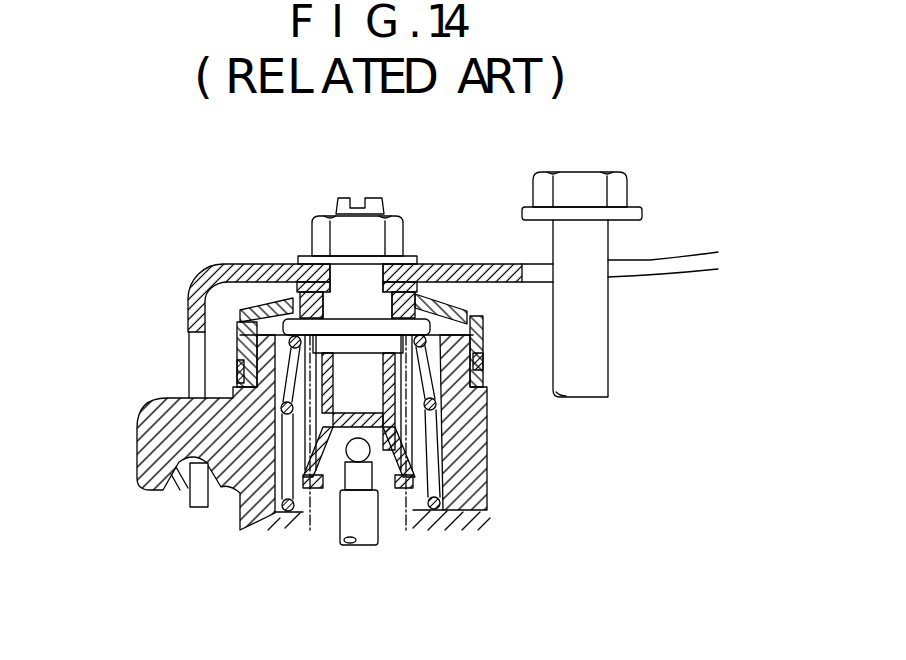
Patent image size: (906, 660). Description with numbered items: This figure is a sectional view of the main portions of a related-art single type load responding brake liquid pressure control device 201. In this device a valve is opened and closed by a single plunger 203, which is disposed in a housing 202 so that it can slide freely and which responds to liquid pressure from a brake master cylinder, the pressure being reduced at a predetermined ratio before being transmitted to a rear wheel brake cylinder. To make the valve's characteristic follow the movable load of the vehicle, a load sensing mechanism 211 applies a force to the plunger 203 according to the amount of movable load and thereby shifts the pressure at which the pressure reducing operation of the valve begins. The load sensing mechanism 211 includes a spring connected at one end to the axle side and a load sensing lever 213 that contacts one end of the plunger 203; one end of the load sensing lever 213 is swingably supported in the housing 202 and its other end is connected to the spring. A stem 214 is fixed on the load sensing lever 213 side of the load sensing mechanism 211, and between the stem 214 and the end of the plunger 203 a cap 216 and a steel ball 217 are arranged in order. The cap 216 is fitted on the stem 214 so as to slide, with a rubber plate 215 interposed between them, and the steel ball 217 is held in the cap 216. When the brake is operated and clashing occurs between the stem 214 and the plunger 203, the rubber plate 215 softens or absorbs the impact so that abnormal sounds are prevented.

The single type load responding brake liquid pressure control device 201 is at (441, 194).
The load sensing mechanism 211 is at (662, 252).
The load sensing lever 213 is at (252, 270).
The rubber plate 215 is at (333, 422).
The stem 214 is at (370, 385).
The cap 216 is at (393, 410).
The housing 202 is at (470, 478).
The steel ball 217 is at (352, 455).
The plunger 203 is at (342, 530).